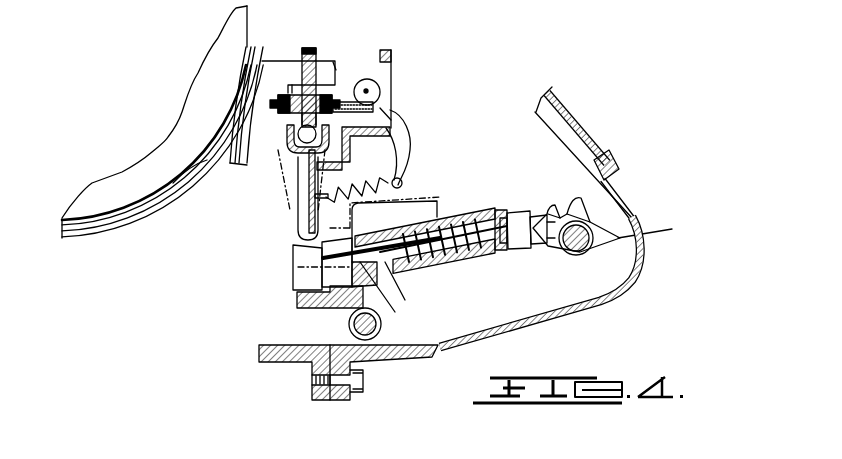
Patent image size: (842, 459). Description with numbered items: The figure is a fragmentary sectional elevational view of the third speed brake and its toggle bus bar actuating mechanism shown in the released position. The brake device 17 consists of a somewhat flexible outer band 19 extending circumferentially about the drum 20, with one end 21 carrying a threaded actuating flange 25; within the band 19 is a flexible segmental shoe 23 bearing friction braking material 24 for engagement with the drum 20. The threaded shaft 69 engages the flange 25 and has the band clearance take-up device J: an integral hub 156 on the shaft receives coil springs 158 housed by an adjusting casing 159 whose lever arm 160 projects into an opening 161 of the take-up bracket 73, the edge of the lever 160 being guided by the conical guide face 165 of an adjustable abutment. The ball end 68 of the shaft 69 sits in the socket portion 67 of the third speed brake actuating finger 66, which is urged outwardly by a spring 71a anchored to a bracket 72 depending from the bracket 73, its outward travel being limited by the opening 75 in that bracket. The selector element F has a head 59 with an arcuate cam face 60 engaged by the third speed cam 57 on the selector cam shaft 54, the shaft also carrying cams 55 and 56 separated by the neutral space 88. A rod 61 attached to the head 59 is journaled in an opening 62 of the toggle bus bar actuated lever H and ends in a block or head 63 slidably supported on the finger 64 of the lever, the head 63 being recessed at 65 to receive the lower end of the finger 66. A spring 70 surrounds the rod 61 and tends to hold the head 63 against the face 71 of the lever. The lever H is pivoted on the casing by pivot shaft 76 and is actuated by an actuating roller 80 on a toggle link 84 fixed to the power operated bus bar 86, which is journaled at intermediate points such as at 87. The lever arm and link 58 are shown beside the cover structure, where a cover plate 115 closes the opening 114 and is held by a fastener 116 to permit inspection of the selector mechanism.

The brake device 17 is at (110, 233).
The outer band 19 is at (147, 219).
The drum 20 is at (247, 7).
The end of band 21 is at (273, 62).
The segmental shoe 23 is at (207, 160).
The friction braking material 24 is at (173, 183).
The threaded actuating flange 25 is at (336, 61).
The band clearance take-up device J is at (292, 85).
The threaded shaft 69 is at (309, 48).
The hub 156 is at (336, 66).
The coil springs 158 is at (336, 86).
The adjusting casing 159 is at (278, 104).
The take-up bracket 73 is at (391, 56).
The conical guide face 165 is at (368, 92).
The lever arm 160 is at (382, 108).
The opening of bracket 161 is at (392, 122).
The spring 71a is at (402, 152).
The bracket 72 is at (403, 160).
The opening 75 is at (353, 142).
The ball end 68 is at (293, 146).
The socket portion 67 is at (291, 150).
The third speed brake actuating finger 66 is at (298, 212).
The recess 65 is at (292, 250).
The block or head 63 is at (293, 272).
The finger 64 is at (297, 300).
The opening 62 is at (397, 287).
The spring 70 is at (458, 268).
The actuating roller 80 is at (441, 206).
The rod 61 is at (394, 222).
The toggle bus bar actuated lever H is at (480, 212).
The pivot shaft 76 is at (489, 216).
The head 59 is at (520, 250).
The selector element F is at (512, 213).
The arcuate cam face 60 is at (532, 212).
The third speed cam 57 is at (540, 248).
The cam 55 is at (590, 198).
The cam 56 is at (556, 206).
The selector cam shaft 54 is at (570, 255).
The link 58 is at (655, 231).
The neutral space 88 is at (600, 220).
The intermediate journal point 87 is at (348, 334).
The power operated bus bar 86 is at (365, 365).
The face 71 is at (381, 326).
The toggle link 84 is at (395, 300).
The cover plate 115 is at (572, 127).
The opening 114 is at (538, 113).
The fastener 116 is at (615, 160).